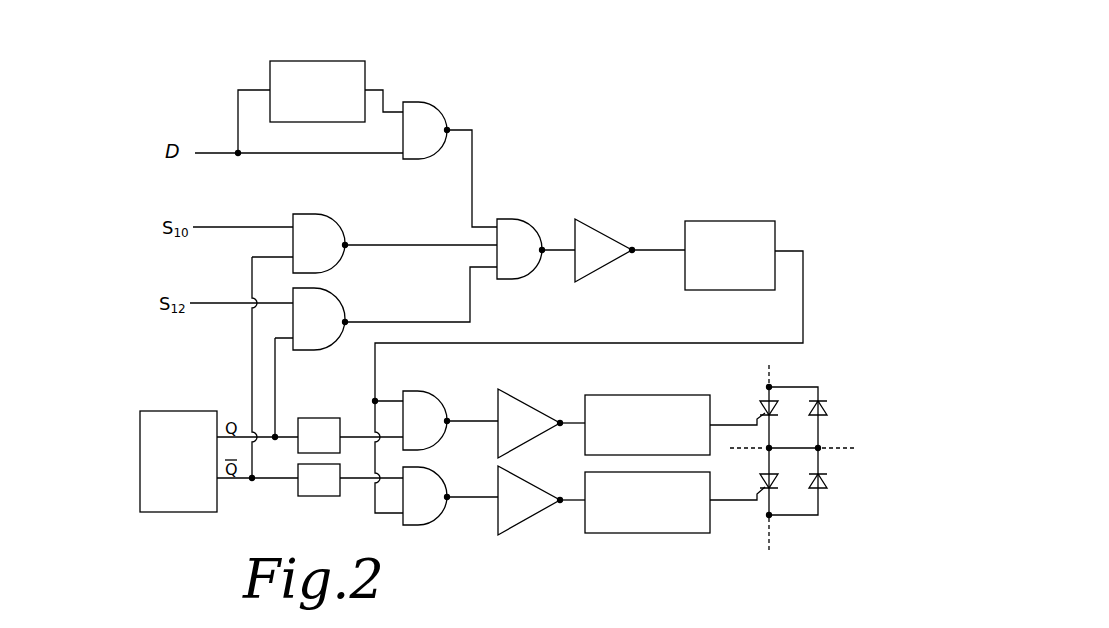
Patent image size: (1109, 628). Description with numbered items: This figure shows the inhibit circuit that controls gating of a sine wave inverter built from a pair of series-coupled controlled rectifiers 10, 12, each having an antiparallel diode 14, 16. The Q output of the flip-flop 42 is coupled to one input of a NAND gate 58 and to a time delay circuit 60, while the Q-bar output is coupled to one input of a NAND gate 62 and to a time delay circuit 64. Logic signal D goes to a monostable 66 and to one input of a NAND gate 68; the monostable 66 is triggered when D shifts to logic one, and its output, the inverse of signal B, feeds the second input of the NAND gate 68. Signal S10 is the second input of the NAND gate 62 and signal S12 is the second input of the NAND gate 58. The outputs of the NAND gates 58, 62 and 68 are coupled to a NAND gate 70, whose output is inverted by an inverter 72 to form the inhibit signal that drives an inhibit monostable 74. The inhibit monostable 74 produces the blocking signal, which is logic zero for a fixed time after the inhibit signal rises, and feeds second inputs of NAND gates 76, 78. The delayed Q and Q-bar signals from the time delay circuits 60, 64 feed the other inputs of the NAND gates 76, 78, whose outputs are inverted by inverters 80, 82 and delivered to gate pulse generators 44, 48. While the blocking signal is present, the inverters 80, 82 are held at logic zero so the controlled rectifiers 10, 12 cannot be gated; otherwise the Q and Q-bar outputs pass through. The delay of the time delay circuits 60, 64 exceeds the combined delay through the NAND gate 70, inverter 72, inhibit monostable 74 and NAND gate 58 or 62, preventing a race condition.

The controlled rectifier 10 is at (762, 410).
The controlled rectifier 12 is at (762, 480).
The antiparallel diode 14 is at (827, 410).
The antiparallel diode 16 is at (827, 483).
The flip-flop 42 is at (172, 420).
The gate pulse generator 44 is at (650, 395).
The gate pulse generator 48 is at (702, 533).
The NAND gate 58 is at (327, 306).
The time delay circuit 60 is at (313, 419).
The NAND gate 62 is at (318, 226).
The time delay circuit 64 is at (330, 489).
The monostable 66 is at (360, 71).
The NAND gate 68 is at (433, 113).
The NAND gate 70 is at (513, 231).
The inverter 72 is at (595, 238).
The inhibit monostable 74 is at (730, 222).
The NAND gate 76 is at (422, 400).
The NAND gate 78 is at (428, 478).
The inverter 80 is at (515, 408).
The inverter 82 is at (527, 513).